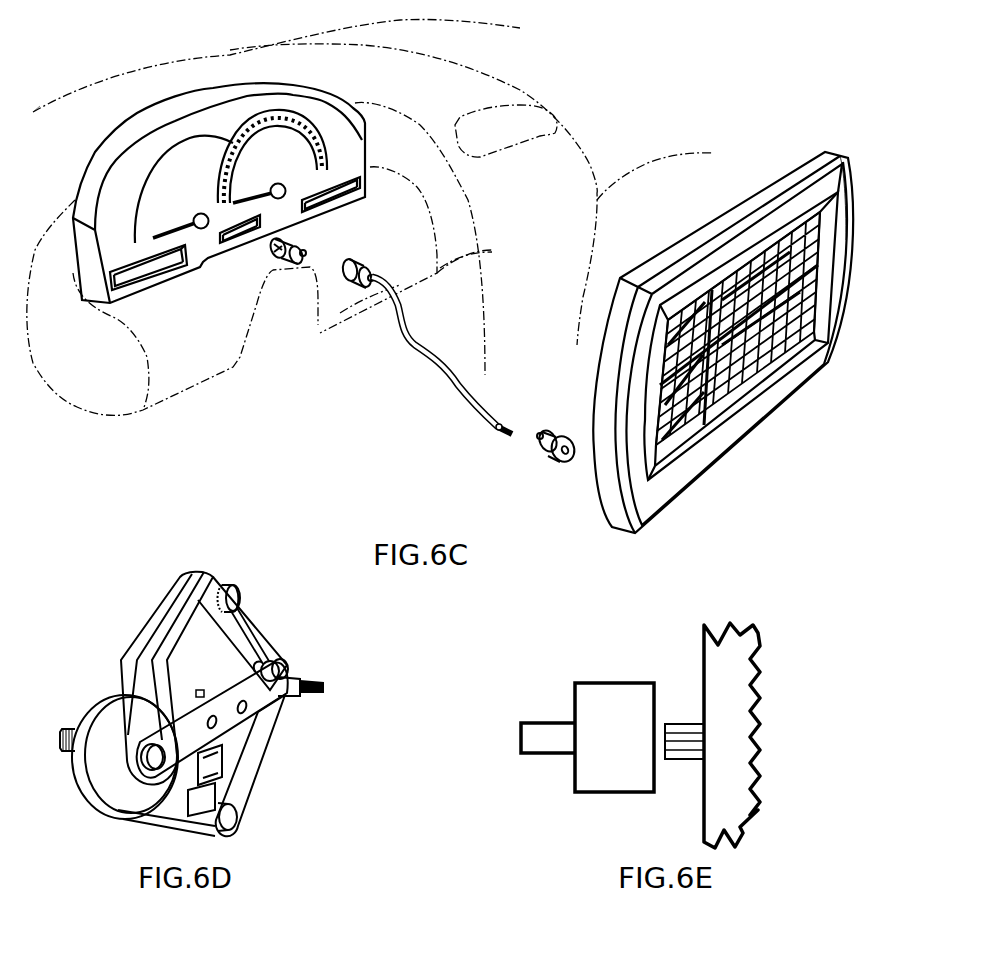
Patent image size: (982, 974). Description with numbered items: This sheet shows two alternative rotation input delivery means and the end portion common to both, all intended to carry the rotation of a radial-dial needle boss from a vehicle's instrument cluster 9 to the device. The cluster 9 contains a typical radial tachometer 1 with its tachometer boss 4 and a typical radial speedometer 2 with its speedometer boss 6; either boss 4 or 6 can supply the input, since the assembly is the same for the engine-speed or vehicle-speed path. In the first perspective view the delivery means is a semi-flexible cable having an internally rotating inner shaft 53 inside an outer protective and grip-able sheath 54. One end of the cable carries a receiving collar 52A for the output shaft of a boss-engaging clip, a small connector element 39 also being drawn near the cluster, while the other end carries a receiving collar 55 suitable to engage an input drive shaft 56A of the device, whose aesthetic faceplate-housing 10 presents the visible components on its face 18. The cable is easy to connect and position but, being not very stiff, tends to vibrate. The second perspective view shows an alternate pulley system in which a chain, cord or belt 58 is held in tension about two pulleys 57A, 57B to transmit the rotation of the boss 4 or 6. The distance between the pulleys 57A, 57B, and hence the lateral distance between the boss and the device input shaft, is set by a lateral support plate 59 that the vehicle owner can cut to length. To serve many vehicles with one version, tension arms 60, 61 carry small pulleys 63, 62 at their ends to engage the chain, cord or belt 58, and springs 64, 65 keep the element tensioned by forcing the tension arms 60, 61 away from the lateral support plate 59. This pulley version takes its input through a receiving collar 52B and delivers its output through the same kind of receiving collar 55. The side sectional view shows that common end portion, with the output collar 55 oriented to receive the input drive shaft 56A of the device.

In FIG. 6C, the radial tachometer 1 is at (153, 207).
In FIG. 6C, the radial speedometer 2 is at (232, 142).
In FIG. 6C, the tachometer boss 4 is at (197, 205).
In FIG. 6C, the speedometer boss 6 is at (273, 178).
In FIG. 6C, the instrument cluster 9 is at (60, 265).
In FIG. 6C, the faceplate-housing 10 is at (737, 217).
In FIG. 6E, the faceplate-housing 10 is at (715, 663).
In FIG. 6C, the face 18 is at (807, 183).
In FIG. 6C, the electrical connector 39 is at (277, 270).
In FIG. 6C, the receiving collar 52A is at (345, 290).
In FIG. 6D, the receiving collar 52B is at (72, 725).
In FIG. 6C, the inner shaft 53 is at (504, 432).
In FIG. 6C, the sheath 54 is at (488, 402).
In FIG. 6C, the receiving collar 55 is at (560, 418).
In FIG. 6E, the receiving collar 55 is at (616, 676).
In FIG. 6E, the input drive shaft 56A is at (676, 724).
In FIG. 6D, the pulley 57A is at (274, 662).
In FIG. 6D, the pulley 57B is at (112, 812).
In FIG. 6D, the chain/cord/belt 58 is at (268, 641).
In FIG. 6D, the lateral support plate 59 is at (228, 720).
In FIG. 6D, the tension arm 60 is at (230, 797).
In FIG. 6D, the tension arm 61 is at (172, 662).
In FIG. 6D, the small pulley 62 is at (200, 830).
In FIG. 6D, the small pulley 63 is at (183, 580).
In FIG. 6D, the spring 64 is at (203, 690).
In FIG. 6D, the spring 65 is at (217, 753).